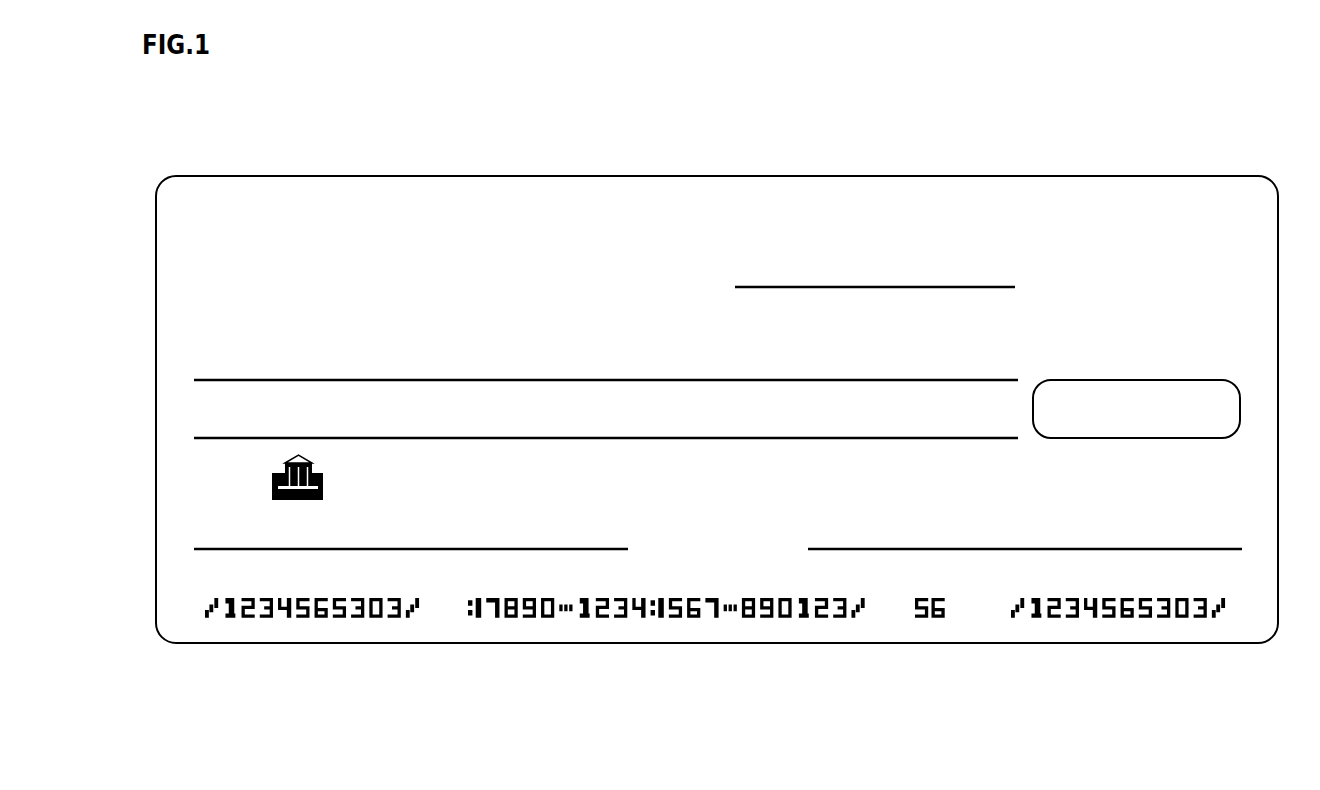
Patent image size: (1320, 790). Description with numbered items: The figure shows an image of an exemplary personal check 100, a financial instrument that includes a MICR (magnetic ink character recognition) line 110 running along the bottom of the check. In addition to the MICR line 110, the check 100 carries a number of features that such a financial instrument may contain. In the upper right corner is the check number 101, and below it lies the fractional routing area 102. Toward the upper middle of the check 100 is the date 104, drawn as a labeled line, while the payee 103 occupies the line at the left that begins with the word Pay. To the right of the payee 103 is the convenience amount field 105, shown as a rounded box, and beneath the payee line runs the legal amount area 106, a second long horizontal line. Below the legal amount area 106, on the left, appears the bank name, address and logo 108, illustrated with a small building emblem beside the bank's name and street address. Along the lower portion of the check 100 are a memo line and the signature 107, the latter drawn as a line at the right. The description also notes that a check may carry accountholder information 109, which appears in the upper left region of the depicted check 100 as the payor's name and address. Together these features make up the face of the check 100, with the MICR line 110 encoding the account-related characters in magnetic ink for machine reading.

The check 100 is at (693, 137).
The check number 101 is at (1173, 195).
The fractional routing area 102 is at (1233, 282).
The payee 103 is at (312, 378).
The date 104 is at (833, 280).
The convenience amount field 105 is at (1159, 544).
The legal amount area 106 is at (215, 430).
The signature 107 is at (1028, 647).
The bank name, address and logo 108 is at (262, 484).
The payor name and address 109 is at (312, 222).
The MICR line 110 is at (1152, 628).